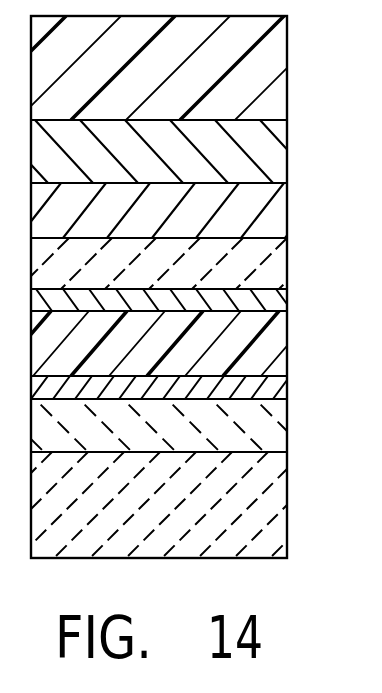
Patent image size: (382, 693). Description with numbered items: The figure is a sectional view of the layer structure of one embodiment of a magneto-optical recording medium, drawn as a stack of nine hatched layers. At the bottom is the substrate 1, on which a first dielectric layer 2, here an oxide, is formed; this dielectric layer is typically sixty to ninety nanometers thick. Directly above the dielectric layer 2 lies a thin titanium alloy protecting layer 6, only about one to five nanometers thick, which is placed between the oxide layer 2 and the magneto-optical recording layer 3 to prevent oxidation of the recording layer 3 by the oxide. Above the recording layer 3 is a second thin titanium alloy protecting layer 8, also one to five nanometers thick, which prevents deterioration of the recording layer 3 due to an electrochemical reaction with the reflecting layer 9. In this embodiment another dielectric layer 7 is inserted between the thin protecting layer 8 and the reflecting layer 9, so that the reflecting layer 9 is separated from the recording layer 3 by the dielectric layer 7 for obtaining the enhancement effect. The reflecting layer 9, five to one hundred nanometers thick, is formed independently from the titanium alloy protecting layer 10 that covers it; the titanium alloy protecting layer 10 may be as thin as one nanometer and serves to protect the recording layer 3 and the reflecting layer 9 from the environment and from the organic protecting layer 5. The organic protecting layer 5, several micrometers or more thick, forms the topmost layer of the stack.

The substrate 1 is at (279, 505).
The dielectric layer 2 is at (282, 437).
The magneto-optical recording layer 3 is at (275, 340).
The organic protecting layer 5 is at (270, 55).
The thin titanium alloy protecting layer 6 is at (275, 392).
The dielectric layer 7 is at (277, 268).
The thin titanium alloy protecting layer 8 is at (277, 305).
The reflecting layer 9 is at (270, 215).
The titanium alloy protecting layer 10 is at (279, 148).